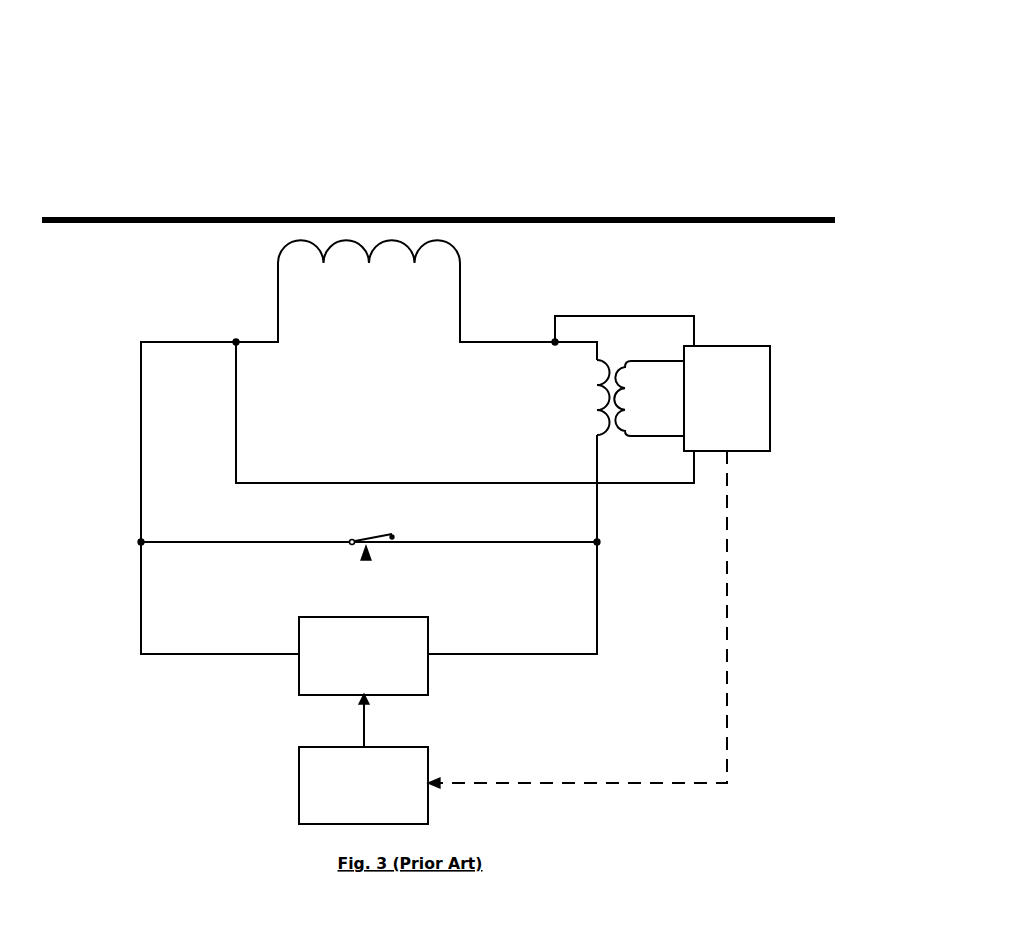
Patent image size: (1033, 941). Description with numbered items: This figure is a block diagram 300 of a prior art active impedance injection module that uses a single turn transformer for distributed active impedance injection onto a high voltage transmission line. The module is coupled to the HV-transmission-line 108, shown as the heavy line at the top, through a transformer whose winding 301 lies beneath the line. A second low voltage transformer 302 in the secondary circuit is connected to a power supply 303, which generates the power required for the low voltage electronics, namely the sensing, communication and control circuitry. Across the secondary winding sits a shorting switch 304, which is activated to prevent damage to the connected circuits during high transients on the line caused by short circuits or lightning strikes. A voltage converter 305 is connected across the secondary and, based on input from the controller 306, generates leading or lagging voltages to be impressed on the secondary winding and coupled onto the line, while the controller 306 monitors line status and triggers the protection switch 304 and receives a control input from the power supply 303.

The HV-transmission-line 108 is at (62, 216).
The block diagram 300 is at (594, 103).
The induction coil 301 is at (367, 262).
The second low voltage transformer 302 is at (617, 350).
The power supply 303 is at (712, 452).
The secondary winding shorting switch 304 is at (378, 535).
The converter 305 is at (370, 616).
The controller 306 is at (297, 783).